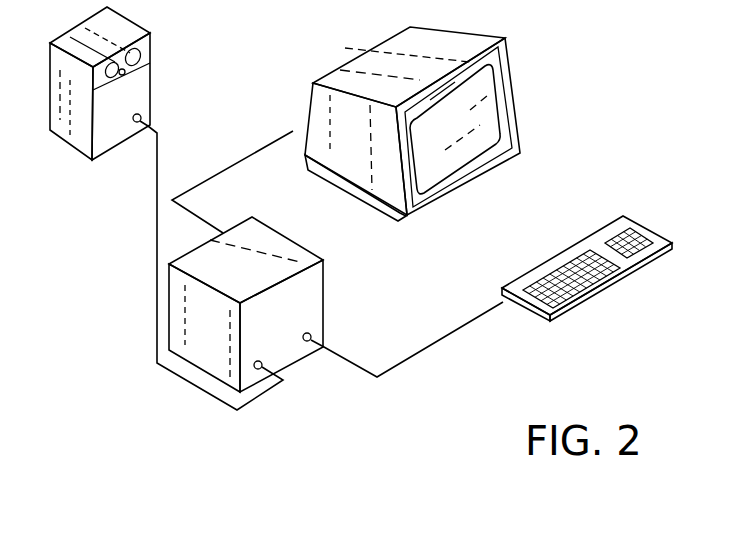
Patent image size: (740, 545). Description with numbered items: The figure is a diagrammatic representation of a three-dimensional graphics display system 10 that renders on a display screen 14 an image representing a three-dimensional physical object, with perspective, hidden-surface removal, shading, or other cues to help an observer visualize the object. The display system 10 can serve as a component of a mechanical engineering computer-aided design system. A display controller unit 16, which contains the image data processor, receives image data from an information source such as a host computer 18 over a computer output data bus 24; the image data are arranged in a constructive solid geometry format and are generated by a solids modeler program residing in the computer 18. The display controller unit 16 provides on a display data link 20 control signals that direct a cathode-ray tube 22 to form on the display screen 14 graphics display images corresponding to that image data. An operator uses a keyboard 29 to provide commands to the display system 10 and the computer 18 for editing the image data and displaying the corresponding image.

The three-dimensional graphics display system 10 is at (566, 340).
The display screen 14 is at (492, 92).
The display controller unit 16 is at (307, 250).
The host computer 18 is at (142, 22).
The display data link 20 is at (260, 147).
The cathode-ray tube 22 is at (373, 58).
The computer output data bus 24 is at (207, 393).
The keyboard 29 is at (562, 317).